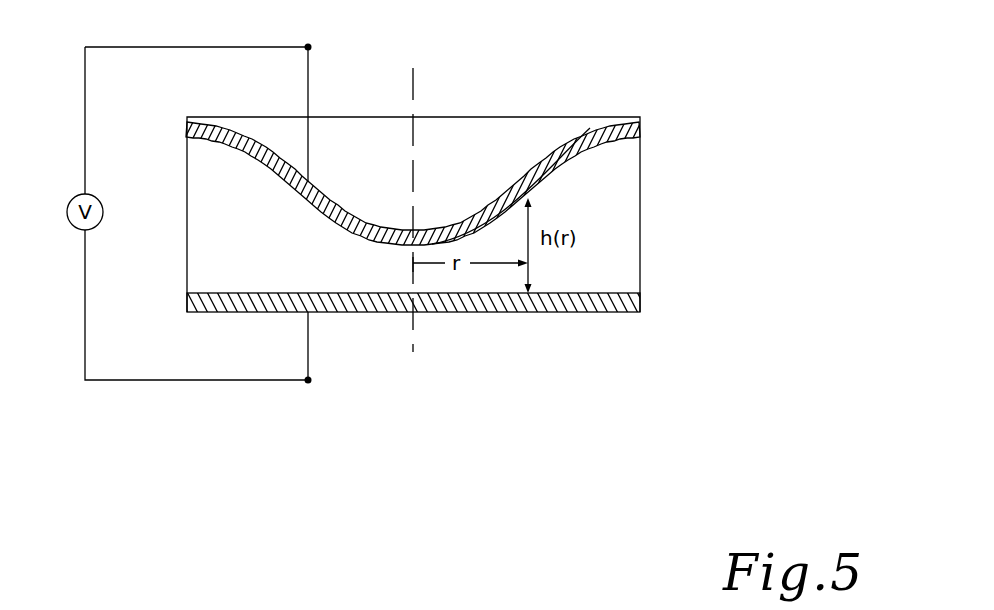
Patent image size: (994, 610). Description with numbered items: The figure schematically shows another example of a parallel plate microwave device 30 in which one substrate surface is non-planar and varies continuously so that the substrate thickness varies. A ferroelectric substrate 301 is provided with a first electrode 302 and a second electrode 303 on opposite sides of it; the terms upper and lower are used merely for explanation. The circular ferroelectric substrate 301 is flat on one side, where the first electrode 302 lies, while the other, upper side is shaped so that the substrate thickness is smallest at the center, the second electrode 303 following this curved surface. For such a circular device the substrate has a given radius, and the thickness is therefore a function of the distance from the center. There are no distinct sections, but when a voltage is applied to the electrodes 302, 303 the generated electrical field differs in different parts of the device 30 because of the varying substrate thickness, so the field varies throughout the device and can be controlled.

The parallel plate microwave device 30 is at (308, 453).
The ferroelectric substrate 301 is at (625, 213).
The first electrode 302 is at (583, 312).
The second electrode 303 is at (590, 130).